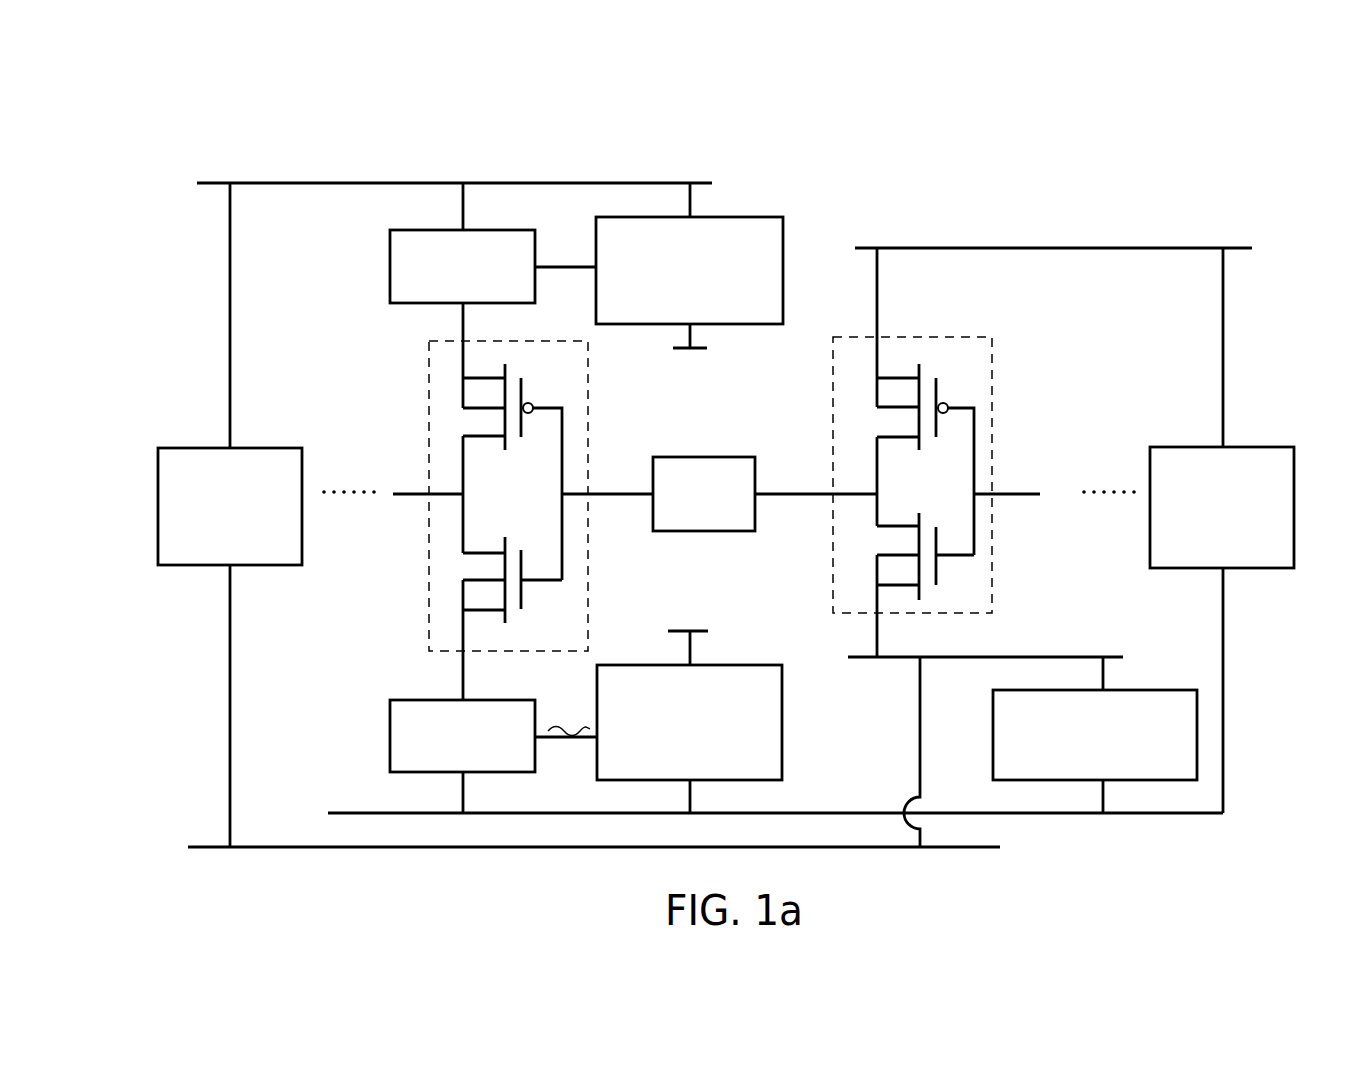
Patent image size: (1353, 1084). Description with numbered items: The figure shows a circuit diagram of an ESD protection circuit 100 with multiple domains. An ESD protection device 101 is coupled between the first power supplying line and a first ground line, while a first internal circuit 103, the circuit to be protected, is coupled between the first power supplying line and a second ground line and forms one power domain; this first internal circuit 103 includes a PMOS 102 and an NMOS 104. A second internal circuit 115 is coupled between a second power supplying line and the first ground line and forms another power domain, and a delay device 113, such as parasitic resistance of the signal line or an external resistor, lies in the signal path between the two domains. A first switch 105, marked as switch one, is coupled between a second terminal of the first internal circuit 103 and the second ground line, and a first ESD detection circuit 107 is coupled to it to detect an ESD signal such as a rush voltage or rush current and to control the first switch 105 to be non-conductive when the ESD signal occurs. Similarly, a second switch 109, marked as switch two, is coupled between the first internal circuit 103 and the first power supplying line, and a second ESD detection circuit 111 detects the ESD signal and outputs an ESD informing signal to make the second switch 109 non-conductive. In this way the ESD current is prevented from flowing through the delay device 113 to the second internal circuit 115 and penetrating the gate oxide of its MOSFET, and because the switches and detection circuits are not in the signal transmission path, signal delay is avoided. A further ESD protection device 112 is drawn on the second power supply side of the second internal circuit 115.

The ESD protection circuit with multiple domains 100 is at (1192, 182).
The ESD protection device 101 is at (158, 495).
The PMOS 102 is at (479, 437).
The first internal circuit 103 is at (469, 496).
The NMOS 104 is at (479, 548).
The first switch 105 is at (390, 737).
The first ESD detection circuit 107 is at (783, 737).
The second switch 109 is at (390, 268).
The second ESD detection circuit 111 is at (784, 241).
The ESD protection device 112 is at (1175, 447).
The delay device 113 is at (703, 457).
The second internal circuit 115 is at (993, 389).